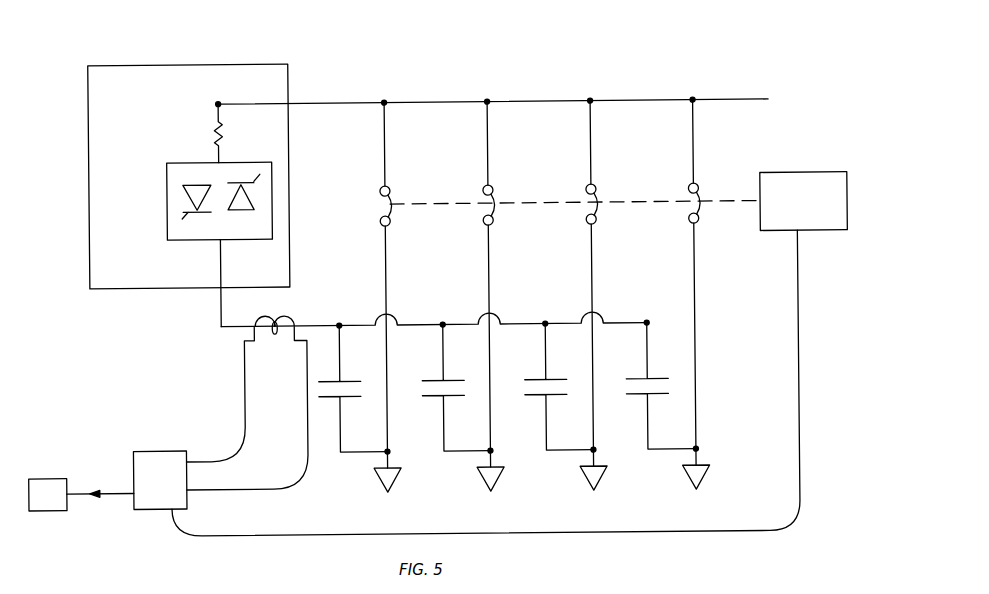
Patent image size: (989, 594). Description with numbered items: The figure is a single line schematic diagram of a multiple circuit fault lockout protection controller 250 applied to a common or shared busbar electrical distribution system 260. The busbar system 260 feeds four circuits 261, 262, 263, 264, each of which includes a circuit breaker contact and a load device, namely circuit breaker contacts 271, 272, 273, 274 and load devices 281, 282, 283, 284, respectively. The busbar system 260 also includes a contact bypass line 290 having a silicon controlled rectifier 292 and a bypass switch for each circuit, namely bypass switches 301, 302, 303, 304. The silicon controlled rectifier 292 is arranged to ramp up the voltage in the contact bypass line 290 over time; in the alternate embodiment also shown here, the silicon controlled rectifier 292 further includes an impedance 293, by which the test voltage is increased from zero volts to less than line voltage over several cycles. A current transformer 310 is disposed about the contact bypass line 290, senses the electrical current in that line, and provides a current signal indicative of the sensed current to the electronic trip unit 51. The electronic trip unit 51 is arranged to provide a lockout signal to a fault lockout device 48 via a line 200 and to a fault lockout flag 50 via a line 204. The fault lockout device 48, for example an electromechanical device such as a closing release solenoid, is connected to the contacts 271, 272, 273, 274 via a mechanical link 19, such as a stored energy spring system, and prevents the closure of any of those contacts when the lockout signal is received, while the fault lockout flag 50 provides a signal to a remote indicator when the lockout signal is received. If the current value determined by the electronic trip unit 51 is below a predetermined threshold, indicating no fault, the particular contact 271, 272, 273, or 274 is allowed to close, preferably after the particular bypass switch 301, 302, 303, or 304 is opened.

The fault lockout protection controller 250 is at (271, 57).
The contact bypass line 290 is at (350, 102).
The busbar electrical distribution system 260 is at (531, 92).
The impedance 293 is at (205, 126).
The silicon controlled rectifier 292 is at (166, 198).
The circuit 261 is at (386, 144).
The circuit 262 is at (489, 144).
The circuit 263 is at (592, 144).
The circuit 264 is at (694, 144).
The circuit breaker contact 271 is at (390, 222).
The circuit breaker contact 272 is at (493, 222).
The circuit breaker contact 273 is at (596, 222).
The circuit breaker contact 274 is at (698, 222).
The mechanical link 19 is at (714, 205).
The fault lockout device 48 is at (813, 175).
The current transformer 310 is at (292, 313).
The bypass switch 301 is at (351, 396).
The bypass switch 302 is at (454, 396).
The bypass switch 303 is at (557, 396).
The bypass switch 304 is at (658, 396).
The load device 281 is at (391, 479).
The load device 282 is at (494, 479).
The load device 283 is at (597, 479).
The load device 284 is at (700, 479).
The electronic trip unit 51 is at (168, 448).
The fault lockout flag 50 is at (46, 474).
The line 204 is at (109, 492).
The line 200 is at (549, 531).